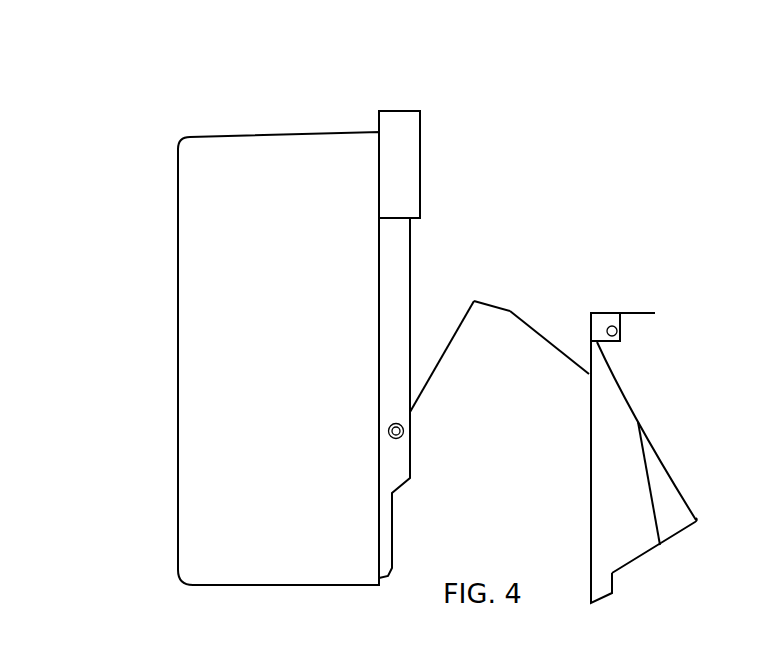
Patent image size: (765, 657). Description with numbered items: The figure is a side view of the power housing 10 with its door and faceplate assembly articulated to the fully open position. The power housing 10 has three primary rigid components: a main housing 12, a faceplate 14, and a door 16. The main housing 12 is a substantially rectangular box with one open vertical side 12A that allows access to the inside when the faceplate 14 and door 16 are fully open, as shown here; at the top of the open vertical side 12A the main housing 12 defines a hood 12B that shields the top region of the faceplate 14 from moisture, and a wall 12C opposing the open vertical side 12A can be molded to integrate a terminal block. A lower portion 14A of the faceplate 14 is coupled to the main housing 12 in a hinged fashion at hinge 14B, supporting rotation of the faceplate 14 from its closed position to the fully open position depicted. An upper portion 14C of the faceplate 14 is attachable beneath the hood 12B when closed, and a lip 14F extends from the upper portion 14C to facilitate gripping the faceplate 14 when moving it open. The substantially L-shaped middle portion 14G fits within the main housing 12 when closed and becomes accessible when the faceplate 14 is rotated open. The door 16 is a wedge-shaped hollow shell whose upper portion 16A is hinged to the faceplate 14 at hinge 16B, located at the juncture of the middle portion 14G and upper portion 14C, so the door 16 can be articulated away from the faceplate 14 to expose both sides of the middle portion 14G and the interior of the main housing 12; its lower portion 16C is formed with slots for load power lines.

The power housing 10 is at (560, 73).
The main housing 12 is at (287, 155).
The open vertical side 12A is at (410, 249).
The hood 12B is at (408, 123).
The wall 12C is at (178, 170).
The faceplate 14 is at (638, 205).
The lower portion of faceplate 14A is at (448, 345).
The hinge 14B is at (403, 431).
The upper portion of faceplate 14C is at (655, 313).
The lip 14F is at (614, 346).
The middle portion of faceplate 14G is at (506, 312).
The door 16 is at (610, 505).
The upper portion of door 16A is at (604, 352).
The hinge 16B is at (618, 320).
The lower portion of door 16C is at (640, 557).